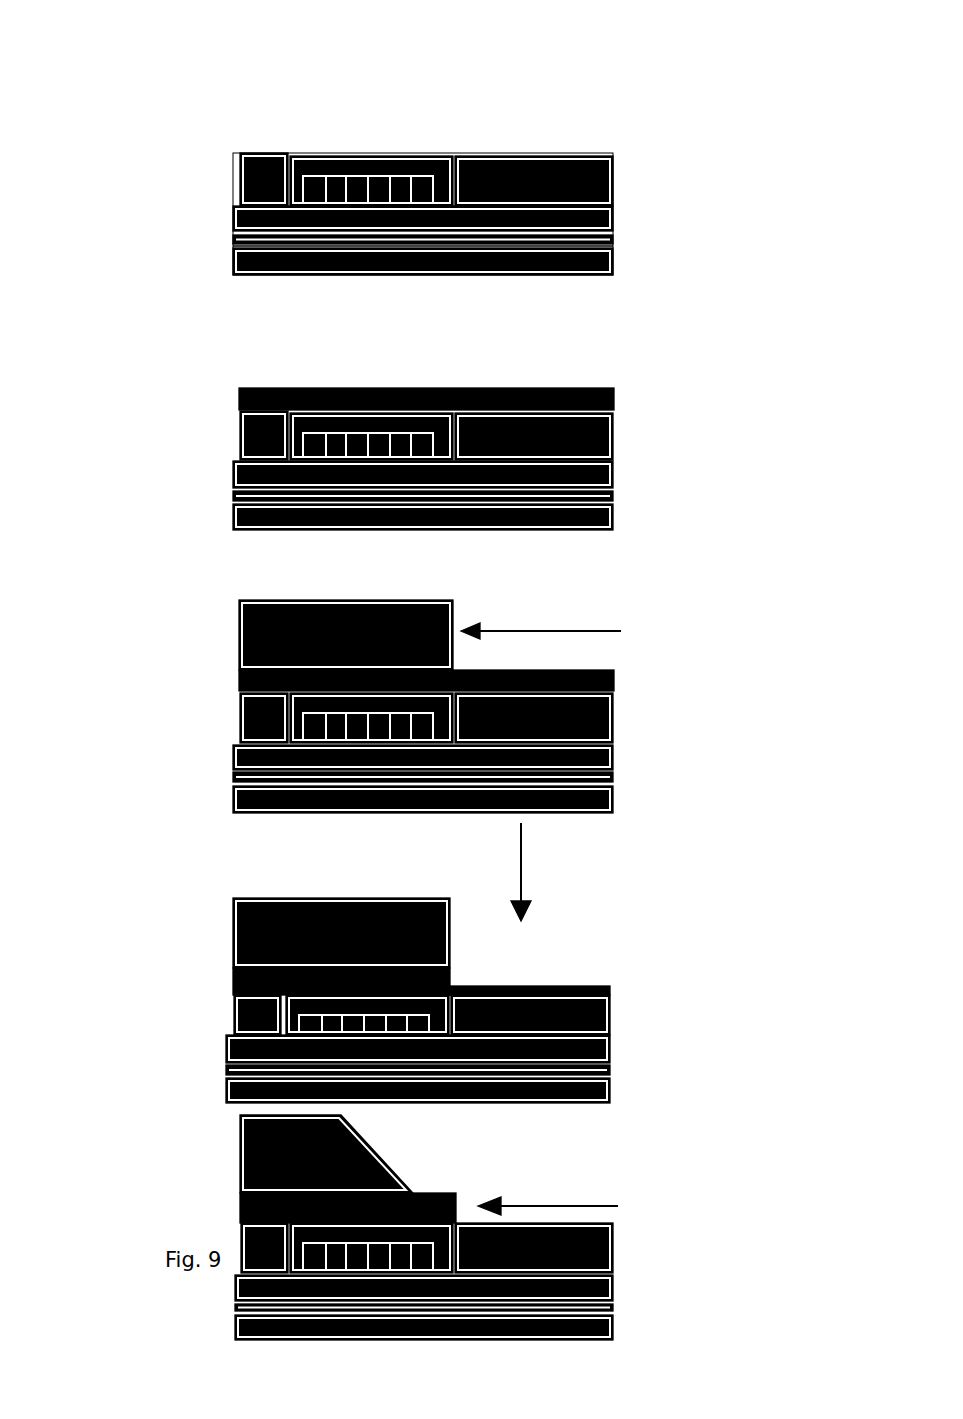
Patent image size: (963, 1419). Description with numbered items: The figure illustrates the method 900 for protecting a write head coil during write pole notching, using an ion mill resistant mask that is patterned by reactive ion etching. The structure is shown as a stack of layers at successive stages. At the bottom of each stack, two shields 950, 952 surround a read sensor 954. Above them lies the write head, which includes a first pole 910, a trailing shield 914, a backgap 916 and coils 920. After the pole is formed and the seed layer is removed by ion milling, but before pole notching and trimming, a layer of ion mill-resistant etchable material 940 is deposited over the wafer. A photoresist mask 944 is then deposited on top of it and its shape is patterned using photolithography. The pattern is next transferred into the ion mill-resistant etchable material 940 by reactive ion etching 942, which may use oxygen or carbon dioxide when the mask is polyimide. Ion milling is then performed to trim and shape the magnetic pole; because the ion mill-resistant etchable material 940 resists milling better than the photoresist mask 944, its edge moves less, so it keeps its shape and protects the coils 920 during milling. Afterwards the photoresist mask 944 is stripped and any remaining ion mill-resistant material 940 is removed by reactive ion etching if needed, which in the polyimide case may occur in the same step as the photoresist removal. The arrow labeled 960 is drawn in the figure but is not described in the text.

The method for protecting write head coil 900 is at (165, 109).
The first pole 910 is at (228, 210).
The trailing shield 914 is at (250, 180).
The backgap 916 is at (602, 162).
The coils 920 is at (408, 168).
The ion mill-resistant etchable material 940 is at (587, 380).
The reactive ion etching 942 is at (515, 843).
The photoresist mask 944 is at (247, 657).
The shield 950 is at (228, 268).
The shield 952 is at (225, 231).
The read sensor 954 is at (225, 240).
The removal direction 960 is at (582, 1201).